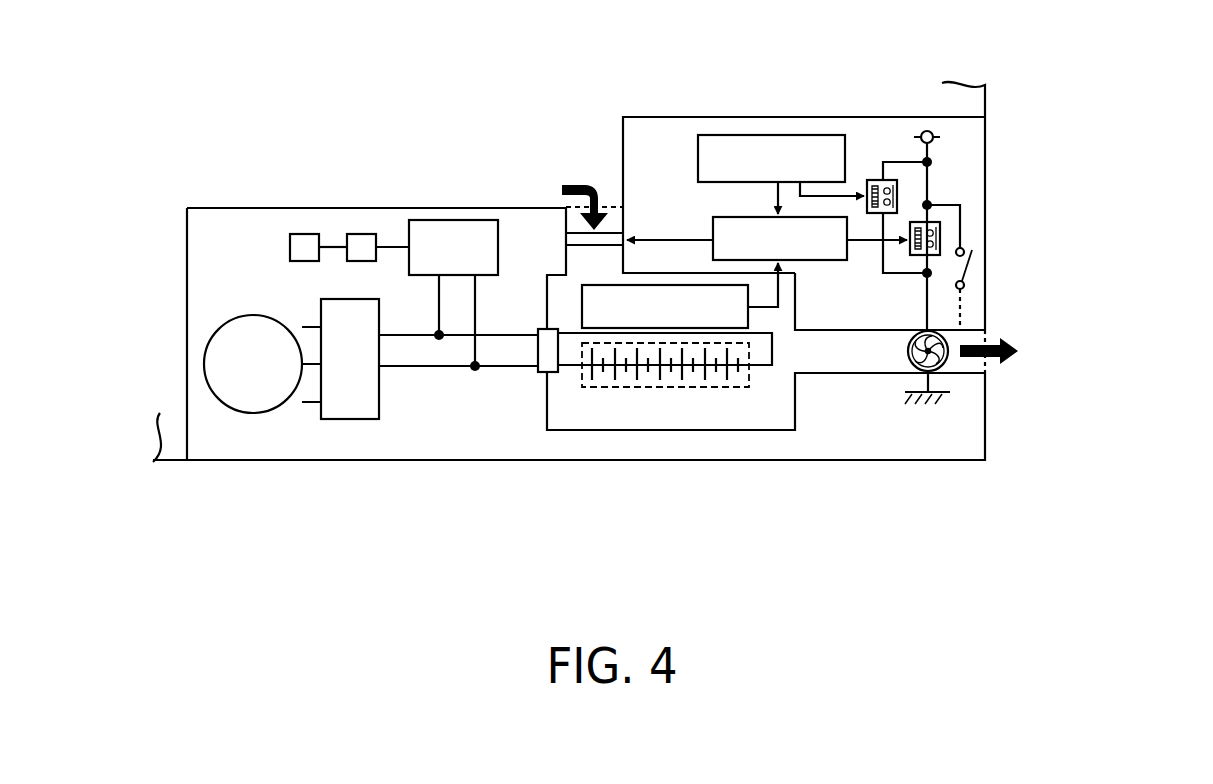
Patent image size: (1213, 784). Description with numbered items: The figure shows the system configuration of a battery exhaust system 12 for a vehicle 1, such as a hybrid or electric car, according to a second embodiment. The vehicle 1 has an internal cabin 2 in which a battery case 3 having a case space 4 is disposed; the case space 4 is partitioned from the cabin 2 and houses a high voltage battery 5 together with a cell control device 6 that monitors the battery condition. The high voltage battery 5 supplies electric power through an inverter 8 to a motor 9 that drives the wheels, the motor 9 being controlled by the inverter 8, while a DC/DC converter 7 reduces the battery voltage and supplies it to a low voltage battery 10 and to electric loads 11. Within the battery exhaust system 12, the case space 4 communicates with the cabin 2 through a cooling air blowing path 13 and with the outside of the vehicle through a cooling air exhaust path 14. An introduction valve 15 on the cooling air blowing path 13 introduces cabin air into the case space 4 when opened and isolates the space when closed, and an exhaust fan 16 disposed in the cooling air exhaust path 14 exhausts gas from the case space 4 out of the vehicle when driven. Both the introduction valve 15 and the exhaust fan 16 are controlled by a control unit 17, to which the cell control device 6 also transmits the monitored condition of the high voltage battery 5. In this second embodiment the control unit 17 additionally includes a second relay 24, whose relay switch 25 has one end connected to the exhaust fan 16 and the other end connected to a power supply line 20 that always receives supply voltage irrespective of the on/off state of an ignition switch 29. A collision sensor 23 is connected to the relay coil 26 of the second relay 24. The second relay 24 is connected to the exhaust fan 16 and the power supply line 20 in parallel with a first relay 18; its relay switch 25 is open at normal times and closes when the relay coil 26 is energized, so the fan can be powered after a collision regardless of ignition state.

The vehicle 1 is at (278, 508).
The cabin 2 is at (257, 122).
The battery case 3 is at (585, 432).
The case space 4 is at (632, 413).
The high voltage battery 5 is at (678, 382).
The cell control device 6 is at (706, 318).
The DC/DC converter 7 is at (460, 237).
The inverter 8 is at (350, 407).
The motor 9 is at (250, 405).
The low voltage battery 10 is at (362, 242).
The electric loads 11 is at (306, 242).
The battery exhaust system 12 is at (703, 110).
The cooling air blowing path 13 is at (578, 262).
The cooling air exhaust path 14 is at (835, 360).
The introduction valve 15 is at (612, 235).
The exhaust fan 16 is at (912, 373).
The control unit 17 is at (722, 233).
The first relay 18 is at (943, 237).
The power supply line 20 is at (934, 133).
The collision sensor 23 is at (710, 155).
The second relay 24 is at (871, 176).
The relay switch 25 is at (898, 196).
The relay coil 26 is at (866, 193).
The ignition switch 29 is at (972, 266).